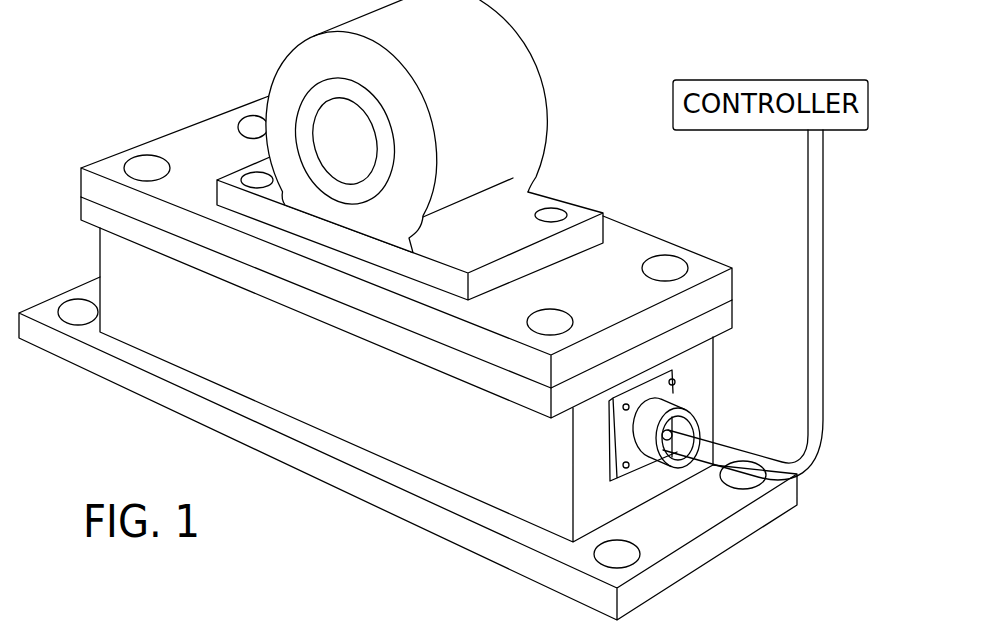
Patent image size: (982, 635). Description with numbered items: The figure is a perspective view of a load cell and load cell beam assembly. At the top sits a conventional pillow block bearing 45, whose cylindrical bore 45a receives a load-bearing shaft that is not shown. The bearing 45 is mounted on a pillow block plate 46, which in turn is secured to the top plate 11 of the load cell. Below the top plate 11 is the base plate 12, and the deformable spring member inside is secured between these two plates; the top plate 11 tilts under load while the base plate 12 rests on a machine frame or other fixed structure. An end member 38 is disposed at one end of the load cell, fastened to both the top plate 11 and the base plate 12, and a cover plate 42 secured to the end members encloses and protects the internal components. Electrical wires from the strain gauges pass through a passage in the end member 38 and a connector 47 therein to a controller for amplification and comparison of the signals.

The top plate 11 is at (735, 315).
The base plate 12 is at (740, 540).
The end member 38 is at (707, 432).
The cover plate 42 is at (110, 253).
The pillow block bearing 45 is at (540, 70).
The cylindrical bore 45a is at (322, 110).
The pillow block plate 46 is at (643, 237).
The connector 47 is at (687, 411).